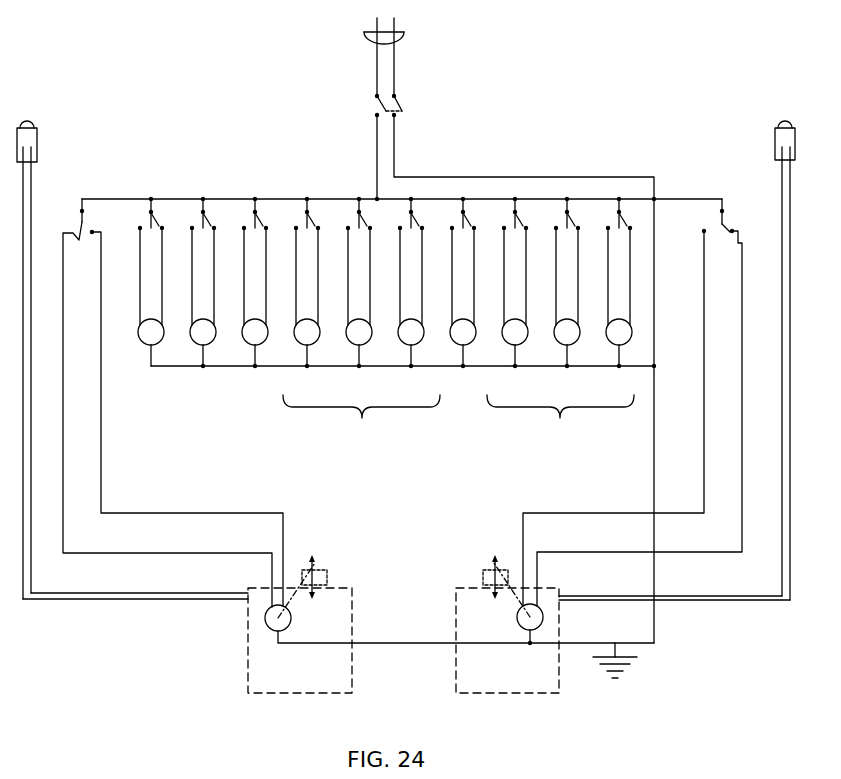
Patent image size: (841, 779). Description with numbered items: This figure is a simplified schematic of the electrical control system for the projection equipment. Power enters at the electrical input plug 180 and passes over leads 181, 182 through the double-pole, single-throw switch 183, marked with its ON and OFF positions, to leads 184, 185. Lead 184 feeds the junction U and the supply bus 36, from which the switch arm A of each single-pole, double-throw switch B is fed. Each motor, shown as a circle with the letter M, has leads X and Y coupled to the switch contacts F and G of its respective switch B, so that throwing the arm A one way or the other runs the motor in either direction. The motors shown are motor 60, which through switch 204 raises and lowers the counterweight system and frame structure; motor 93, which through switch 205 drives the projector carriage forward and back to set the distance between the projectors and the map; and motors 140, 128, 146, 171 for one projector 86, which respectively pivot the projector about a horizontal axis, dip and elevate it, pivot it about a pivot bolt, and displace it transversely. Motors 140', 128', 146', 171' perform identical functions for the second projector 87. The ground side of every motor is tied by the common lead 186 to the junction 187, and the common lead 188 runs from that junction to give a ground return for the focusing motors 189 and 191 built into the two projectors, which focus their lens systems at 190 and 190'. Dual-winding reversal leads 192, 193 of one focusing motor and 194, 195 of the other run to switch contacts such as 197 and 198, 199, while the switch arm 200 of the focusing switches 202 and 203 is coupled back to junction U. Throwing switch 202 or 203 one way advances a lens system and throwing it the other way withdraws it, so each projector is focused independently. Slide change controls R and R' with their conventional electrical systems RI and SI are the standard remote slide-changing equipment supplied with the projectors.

The power supply bus conductor 36 is at (700, 160).
The motor and gear box assembly 60 is at (140, 393).
The motor and gear box assembly 93 is at (205, 393).
The motor 140 is at (273, 295).
The motor 128 is at (326, 295).
The motor 146 is at (220, 295).
The motor 171 is at (428, 295).
The motor 140' is at (482, 295).
The motor 128' is at (530, 295).
The motor 146' is at (584, 295).
The motor 171' is at (632, 295).
The projector 86 is at (377, 441).
The projector 87 is at (575, 441).
The electrical input plug 180 is at (409, 46).
The lead 181 is at (353, 57).
The lead 182 is at (418, 57).
The double-pole, single-throw switch 183 is at (415, 116).
The lead 184 is at (353, 157).
The lead 185 is at (524, 379).
The common lead 186 is at (424, 345).
The junction 187 is at (676, 353).
The common lead 188 is at (623, 579).
The motor 189 is at (459, 604).
The lens system focusing 190 is at (327, 561).
The lens system focusing 190' is at (480, 561).
The motor 191 is at (508, 603).
The motor reversal lead 192 is at (202, 538).
The motor reversal lead 193 is at (238, 497).
The motor reversal lead 194 is at (621, 567).
The motor reversal lead 195 is at (551, 497).
The switch contact 197 is at (174, 418).
The switch contact 198 is at (614, 407).
The switch contact 199 is at (657, 418).
The switch arm 200 is at (425, 195).
The switch 202 is at (75, 210).
The switch 203 is at (773, 231).
The switch 204 is at (203, 186).
The switch 205 is at (262, 187).
The slide change control R is at (132, 360).
The slide change control R' is at (677, 360).
The electrical system RI is at (37, 503).
The electrical system SI is at (804, 480).
The junction U is at (364, 188).
The switch contact F is at (108, 222).
The switch arm A is at (170, 217).
The switch contact G is at (170, 243).
The motor lead X is at (128, 291).
The motor lead Y is at (171, 292).
The single-pole, double-throw switch B is at (338, 221).
The on position ON is at (346, 105).
The off position OFF is at (424, 105).